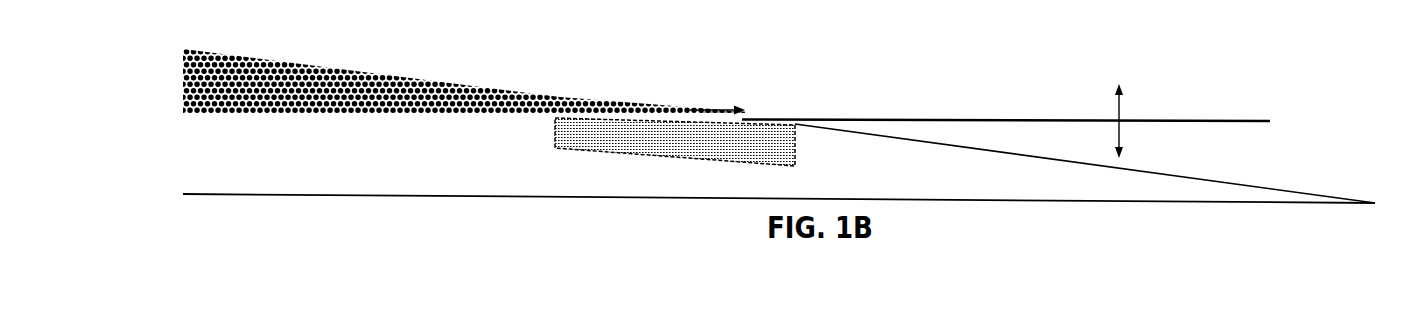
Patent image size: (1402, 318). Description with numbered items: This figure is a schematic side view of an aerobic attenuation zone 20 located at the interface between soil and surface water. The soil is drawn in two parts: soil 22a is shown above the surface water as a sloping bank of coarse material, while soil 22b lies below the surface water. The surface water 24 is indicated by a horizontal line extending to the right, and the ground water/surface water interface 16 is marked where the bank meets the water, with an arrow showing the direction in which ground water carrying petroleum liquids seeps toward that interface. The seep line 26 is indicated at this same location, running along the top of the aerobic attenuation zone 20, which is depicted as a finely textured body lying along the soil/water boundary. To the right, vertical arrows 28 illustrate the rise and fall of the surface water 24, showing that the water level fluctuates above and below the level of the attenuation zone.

The soil 22a is at (277, 72).
The soil 22b is at (299, 163).
The aerobic attenuation zone 20 is at (794, 146).
The ground water/surface water interface 16 is at (697, 108).
The seep line 26 is at (700, 110).
The water 24 is at (938, 118).
The vertical arrows 28 is at (1122, 112).